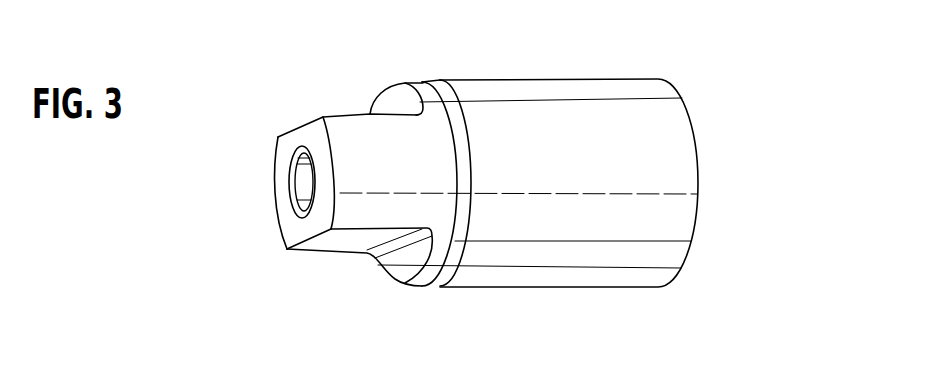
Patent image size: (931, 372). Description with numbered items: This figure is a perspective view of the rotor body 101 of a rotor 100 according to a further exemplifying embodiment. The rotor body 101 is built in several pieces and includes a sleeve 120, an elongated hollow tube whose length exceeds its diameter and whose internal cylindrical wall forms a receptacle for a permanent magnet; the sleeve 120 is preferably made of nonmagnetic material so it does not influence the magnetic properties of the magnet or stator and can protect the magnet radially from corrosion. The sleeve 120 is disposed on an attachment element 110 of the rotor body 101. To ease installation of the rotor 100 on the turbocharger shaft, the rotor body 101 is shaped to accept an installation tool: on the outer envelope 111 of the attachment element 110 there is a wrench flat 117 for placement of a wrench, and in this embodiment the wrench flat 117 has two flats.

The rotor 100 is at (728, 56).
The rotor body 101 is at (360, 170).
The attachment element 110 is at (364, 290).
The outer envelope 111 is at (378, 158).
The wrench flat 117 is at (353, 248).
The sleeve 120 is at (563, 127).